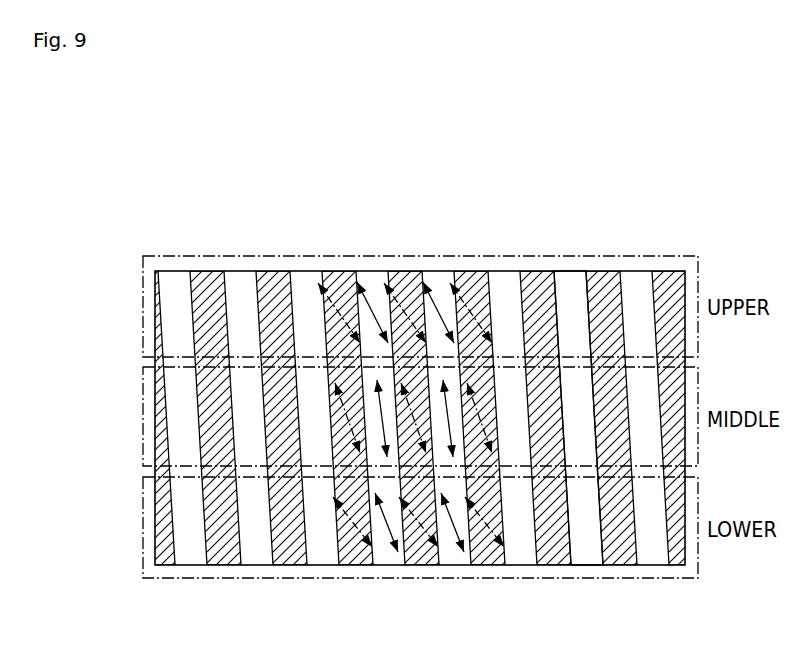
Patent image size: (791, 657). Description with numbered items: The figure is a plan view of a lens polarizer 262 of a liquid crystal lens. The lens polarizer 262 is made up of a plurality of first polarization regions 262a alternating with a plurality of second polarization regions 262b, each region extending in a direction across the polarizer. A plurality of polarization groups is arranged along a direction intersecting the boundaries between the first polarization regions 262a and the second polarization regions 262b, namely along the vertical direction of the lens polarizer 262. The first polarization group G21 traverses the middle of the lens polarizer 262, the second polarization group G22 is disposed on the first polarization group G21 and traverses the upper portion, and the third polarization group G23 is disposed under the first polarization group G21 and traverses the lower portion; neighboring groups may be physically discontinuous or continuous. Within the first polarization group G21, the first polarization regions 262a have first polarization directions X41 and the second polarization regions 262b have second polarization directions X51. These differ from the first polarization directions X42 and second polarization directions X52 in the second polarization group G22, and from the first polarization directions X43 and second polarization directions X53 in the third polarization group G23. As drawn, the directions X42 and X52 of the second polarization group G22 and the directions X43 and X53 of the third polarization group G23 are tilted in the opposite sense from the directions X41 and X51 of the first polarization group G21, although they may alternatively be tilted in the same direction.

The lens polarizer 262 is at (413, 337).
The first polarization region 262a is at (535, 280).
The second polarization region 262b is at (575, 278).
The second polarization group G22 is at (143, 308).
The first polarization group G21 is at (143, 420).
The third polarization group G23 is at (143, 528).
The first polarization direction X42 is at (352, 307).
The second polarization direction X52 is at (373, 315).
The first polarization direction X41 is at (335, 418).
The second polarization direction X51 is at (380, 427).
The first polarization direction X43 is at (356, 527).
The second polarization direction X53 is at (384, 535).